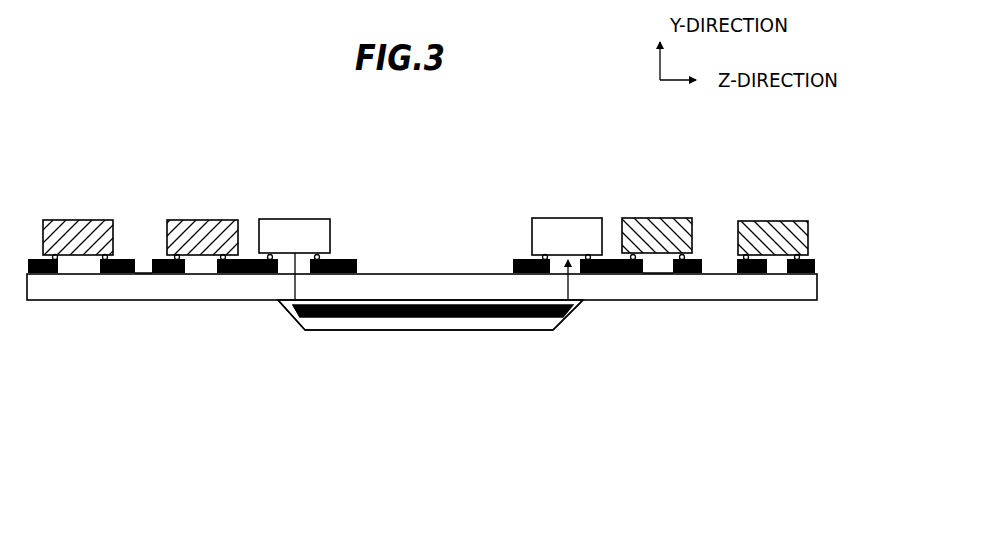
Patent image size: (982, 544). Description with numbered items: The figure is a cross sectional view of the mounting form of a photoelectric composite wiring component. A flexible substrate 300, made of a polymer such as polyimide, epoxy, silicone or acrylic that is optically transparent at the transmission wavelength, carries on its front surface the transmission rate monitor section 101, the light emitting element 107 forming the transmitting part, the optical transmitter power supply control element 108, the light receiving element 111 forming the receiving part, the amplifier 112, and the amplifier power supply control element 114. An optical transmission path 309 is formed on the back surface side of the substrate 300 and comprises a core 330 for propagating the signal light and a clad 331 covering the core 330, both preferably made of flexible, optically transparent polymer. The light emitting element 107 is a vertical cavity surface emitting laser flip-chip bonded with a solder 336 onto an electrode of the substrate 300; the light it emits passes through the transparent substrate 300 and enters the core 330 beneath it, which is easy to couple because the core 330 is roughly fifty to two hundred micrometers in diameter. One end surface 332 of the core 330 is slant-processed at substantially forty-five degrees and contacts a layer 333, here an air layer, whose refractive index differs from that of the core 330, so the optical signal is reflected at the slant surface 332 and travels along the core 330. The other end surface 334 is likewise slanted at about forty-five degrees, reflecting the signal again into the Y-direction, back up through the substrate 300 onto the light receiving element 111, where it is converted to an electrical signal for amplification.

The transmission rate monitor section 101 is at (52, 220).
The optical transmitter power supply control element 108 is at (195, 220).
The light emitting element 107 is at (287, 220).
The light receiving element 111 is at (560, 218).
The amplifier 112 is at (663, 218).
The amplifier power supply control element 114 is at (747, 222).
The solder 336 is at (150, 257).
The flexible substrate 300 is at (170, 295).
The core 330 is at (370, 330).
The clad 331 is at (423, 333).
The end surface of the core 332 is at (303, 330).
The layer 333 is at (260, 322).
The another end surface of the core 334 is at (572, 323).
The optical transmission path 309 is at (490, 338).